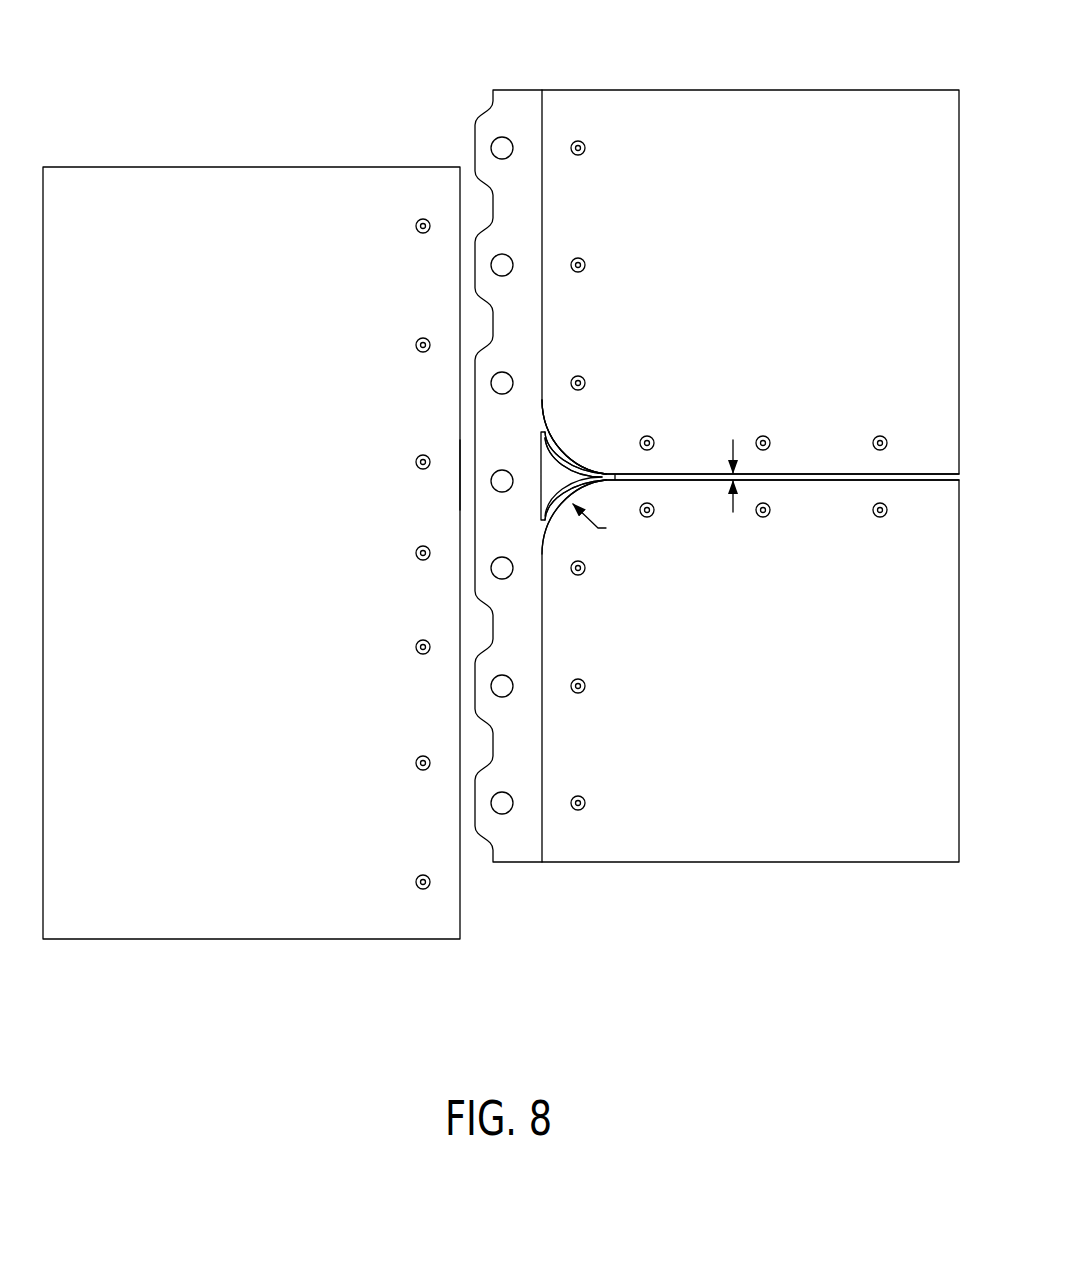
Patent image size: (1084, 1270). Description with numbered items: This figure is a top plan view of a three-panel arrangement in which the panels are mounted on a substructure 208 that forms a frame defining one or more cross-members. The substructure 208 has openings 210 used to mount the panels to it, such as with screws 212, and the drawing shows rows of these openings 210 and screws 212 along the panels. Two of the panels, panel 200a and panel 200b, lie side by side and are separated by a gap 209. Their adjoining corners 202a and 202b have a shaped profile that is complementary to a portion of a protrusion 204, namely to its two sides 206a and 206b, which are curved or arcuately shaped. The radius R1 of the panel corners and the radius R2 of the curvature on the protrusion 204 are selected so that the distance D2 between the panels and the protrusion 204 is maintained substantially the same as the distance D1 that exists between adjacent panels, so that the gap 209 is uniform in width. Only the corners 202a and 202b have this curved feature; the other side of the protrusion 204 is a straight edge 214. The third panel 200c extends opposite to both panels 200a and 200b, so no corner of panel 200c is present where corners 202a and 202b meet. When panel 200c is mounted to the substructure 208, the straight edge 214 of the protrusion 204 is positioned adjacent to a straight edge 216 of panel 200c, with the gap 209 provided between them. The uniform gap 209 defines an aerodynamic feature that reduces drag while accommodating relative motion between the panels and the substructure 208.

The panel 200a is at (845, 825).
The panel 200b is at (802, 120).
The panel 200c is at (302, 940).
The corner 202a is at (556, 506).
The corner 202b is at (592, 467).
The protrusion 204 is at (543, 443).
The side 206a is at (550, 528).
The side 206b is at (574, 460).
The substructure 208 is at (517, 90).
The gap 209 is at (597, 490).
The openings 210 is at (491, 148).
The screws 212 is at (586, 148).
The straight edge 214 is at (561, 489).
The straight edge 216 is at (460, 476).
The radius of the panels R1 is at (566, 446).
The radius of the curvature on the protrusion R2 is at (555, 455).
The distance between adjacent panels D1 is at (730, 492).
The distance between the panels and the protrusion D2 is at (605, 523).